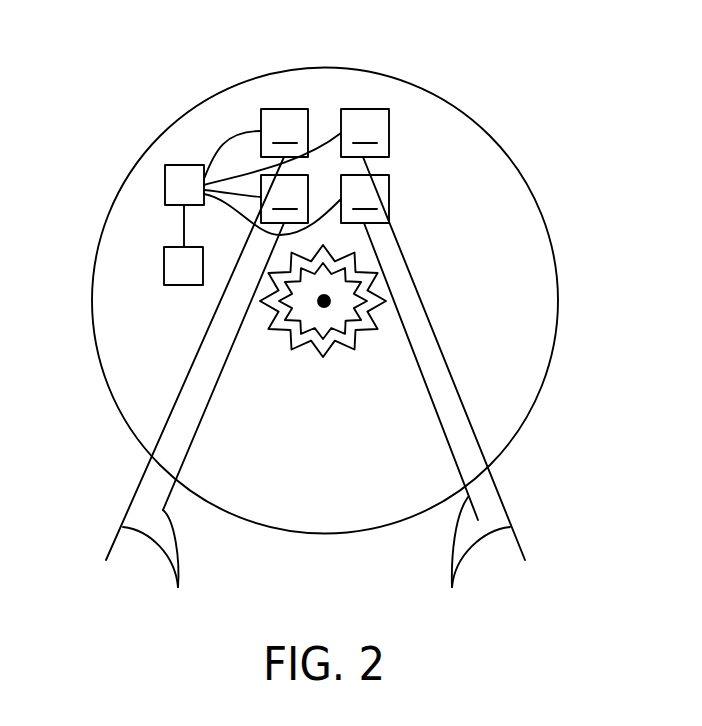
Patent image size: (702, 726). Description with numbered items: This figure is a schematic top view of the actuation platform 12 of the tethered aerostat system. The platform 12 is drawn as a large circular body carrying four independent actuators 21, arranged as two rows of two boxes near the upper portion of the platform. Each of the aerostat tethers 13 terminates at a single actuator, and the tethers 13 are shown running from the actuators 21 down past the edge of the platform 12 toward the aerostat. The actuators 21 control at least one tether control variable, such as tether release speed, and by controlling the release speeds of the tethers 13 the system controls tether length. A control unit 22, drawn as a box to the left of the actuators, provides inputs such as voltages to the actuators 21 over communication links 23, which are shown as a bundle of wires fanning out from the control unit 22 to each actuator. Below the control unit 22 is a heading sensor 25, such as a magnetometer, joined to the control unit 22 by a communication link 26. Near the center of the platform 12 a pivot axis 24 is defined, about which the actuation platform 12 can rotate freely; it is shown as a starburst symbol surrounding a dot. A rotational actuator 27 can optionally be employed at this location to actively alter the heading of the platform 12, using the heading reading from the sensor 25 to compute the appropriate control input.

The actuation platform 12 is at (499, 143).
The tethers 13 is at (315, 386).
The actuators 21 is at (325, 166).
The control unit 22 is at (164, 178).
The communication links 23 is at (240, 172).
The pivot axis 24 is at (318, 304).
The heading sensor 25 is at (164, 261).
The communication link 26 is at (184, 219).
The rotational actuator 27 is at (333, 320).